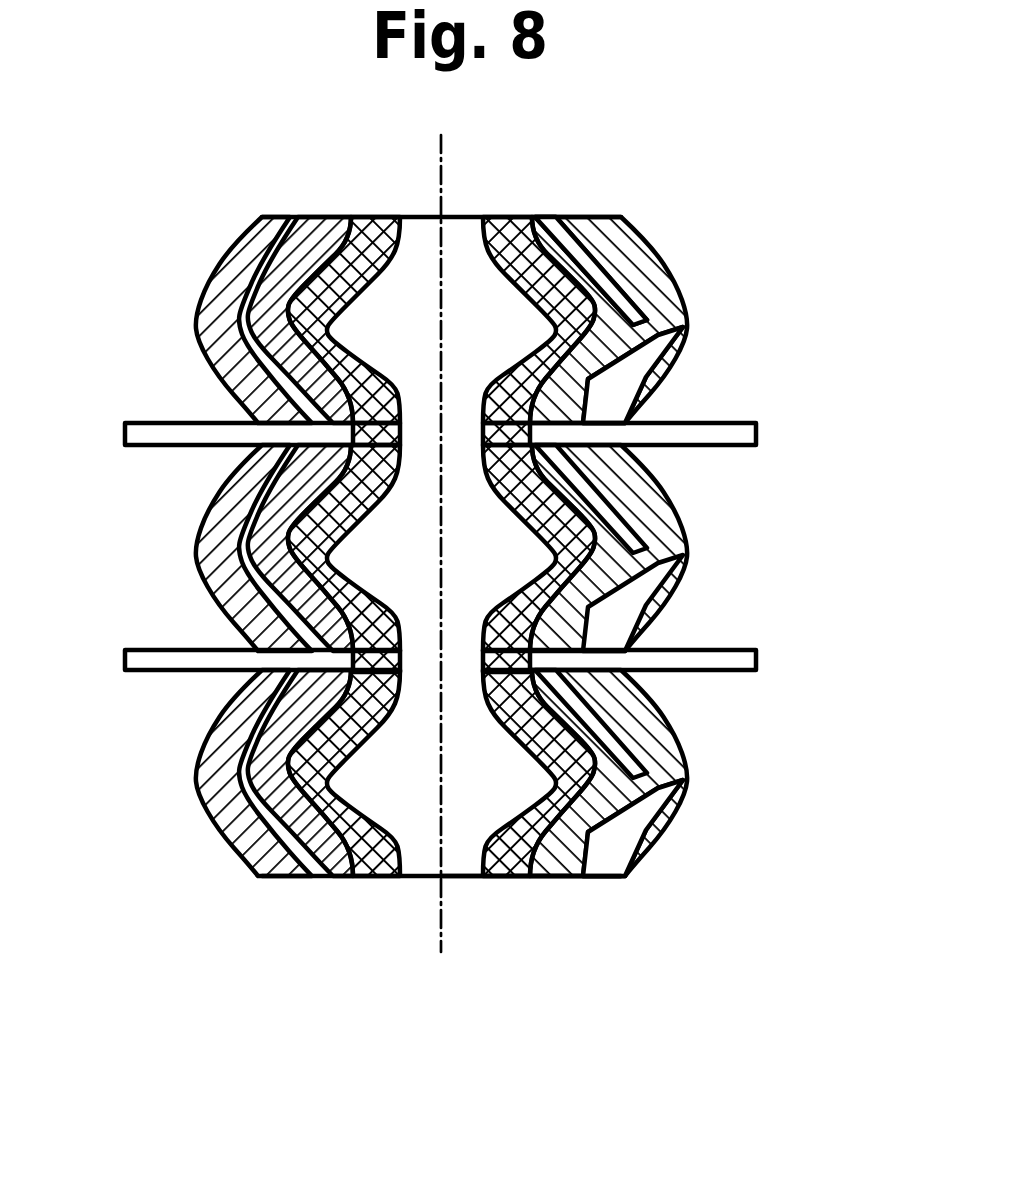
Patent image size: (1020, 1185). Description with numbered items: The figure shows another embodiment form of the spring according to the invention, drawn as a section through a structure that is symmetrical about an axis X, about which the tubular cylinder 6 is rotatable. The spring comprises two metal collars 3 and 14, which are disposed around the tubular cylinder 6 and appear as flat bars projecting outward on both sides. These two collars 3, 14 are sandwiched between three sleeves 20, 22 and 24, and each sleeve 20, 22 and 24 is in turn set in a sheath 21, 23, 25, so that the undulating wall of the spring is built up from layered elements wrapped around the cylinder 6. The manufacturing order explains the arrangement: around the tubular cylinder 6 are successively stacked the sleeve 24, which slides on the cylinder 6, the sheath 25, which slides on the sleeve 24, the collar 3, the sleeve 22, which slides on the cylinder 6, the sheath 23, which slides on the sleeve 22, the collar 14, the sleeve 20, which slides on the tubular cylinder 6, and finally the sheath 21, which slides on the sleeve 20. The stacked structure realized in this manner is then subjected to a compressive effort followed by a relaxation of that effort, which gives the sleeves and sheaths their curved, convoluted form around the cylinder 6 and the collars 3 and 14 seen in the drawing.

The collar 3 is at (714, 663).
The tubular cylinder 6 is at (501, 226).
The collar 14 is at (711, 432).
The sleeve 20 is at (551, 227).
The sheath 21 is at (634, 266).
The sleeve 22 is at (606, 528).
The sheath 23 is at (213, 530).
The sleeve 24 is at (553, 854).
The sheath 25 is at (644, 814).
The axis X is at (438, 918).